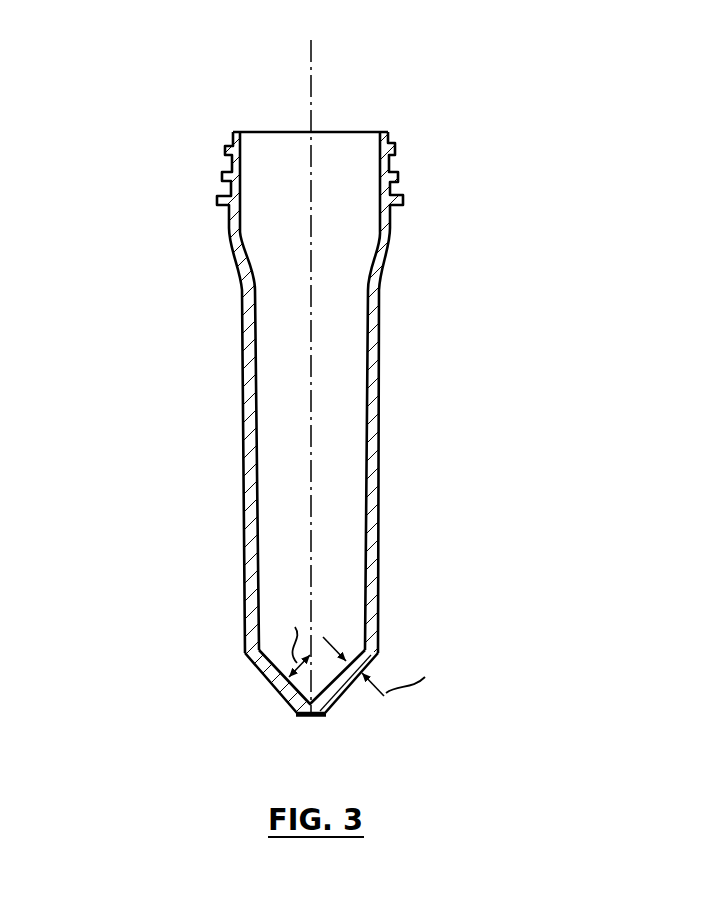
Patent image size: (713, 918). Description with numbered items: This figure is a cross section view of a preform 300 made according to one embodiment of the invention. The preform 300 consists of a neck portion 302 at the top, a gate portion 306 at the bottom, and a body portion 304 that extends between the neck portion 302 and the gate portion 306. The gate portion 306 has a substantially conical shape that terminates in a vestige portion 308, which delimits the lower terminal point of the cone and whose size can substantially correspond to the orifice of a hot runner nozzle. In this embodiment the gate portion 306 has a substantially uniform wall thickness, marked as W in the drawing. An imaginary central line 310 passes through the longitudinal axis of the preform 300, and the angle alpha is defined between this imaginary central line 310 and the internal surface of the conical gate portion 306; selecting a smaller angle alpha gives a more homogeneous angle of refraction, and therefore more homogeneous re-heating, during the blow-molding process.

The preform 300 is at (364, 406).
The neck portion 302 is at (229, 232).
The body portion 304 is at (245, 653).
The gate portion 306 is at (297, 715).
The vestige portion 308 is at (310, 717).
The imaginary central line 310 is at (311, 175).